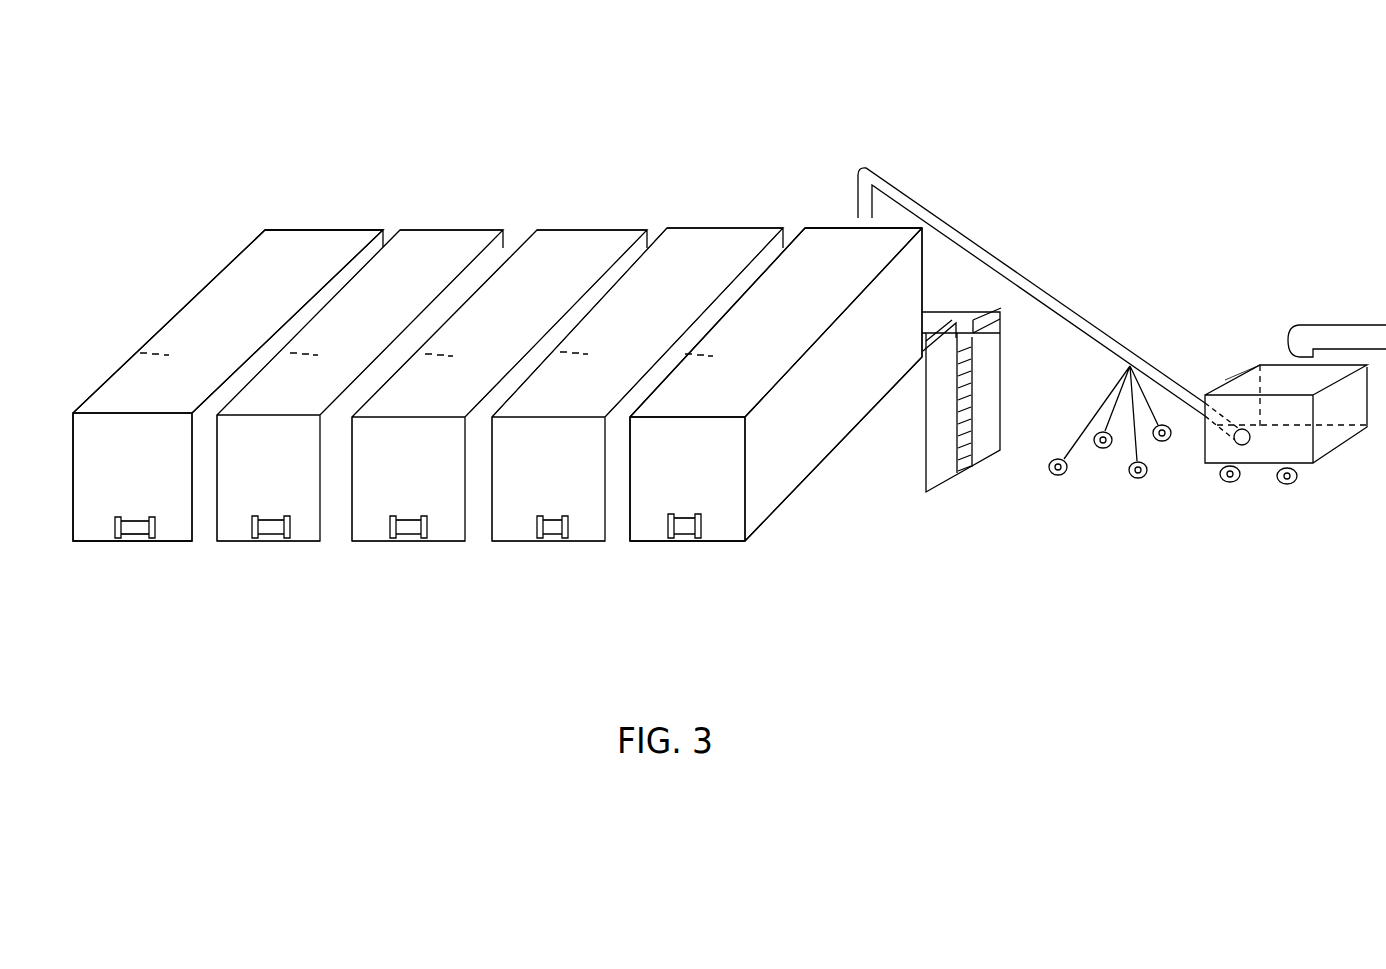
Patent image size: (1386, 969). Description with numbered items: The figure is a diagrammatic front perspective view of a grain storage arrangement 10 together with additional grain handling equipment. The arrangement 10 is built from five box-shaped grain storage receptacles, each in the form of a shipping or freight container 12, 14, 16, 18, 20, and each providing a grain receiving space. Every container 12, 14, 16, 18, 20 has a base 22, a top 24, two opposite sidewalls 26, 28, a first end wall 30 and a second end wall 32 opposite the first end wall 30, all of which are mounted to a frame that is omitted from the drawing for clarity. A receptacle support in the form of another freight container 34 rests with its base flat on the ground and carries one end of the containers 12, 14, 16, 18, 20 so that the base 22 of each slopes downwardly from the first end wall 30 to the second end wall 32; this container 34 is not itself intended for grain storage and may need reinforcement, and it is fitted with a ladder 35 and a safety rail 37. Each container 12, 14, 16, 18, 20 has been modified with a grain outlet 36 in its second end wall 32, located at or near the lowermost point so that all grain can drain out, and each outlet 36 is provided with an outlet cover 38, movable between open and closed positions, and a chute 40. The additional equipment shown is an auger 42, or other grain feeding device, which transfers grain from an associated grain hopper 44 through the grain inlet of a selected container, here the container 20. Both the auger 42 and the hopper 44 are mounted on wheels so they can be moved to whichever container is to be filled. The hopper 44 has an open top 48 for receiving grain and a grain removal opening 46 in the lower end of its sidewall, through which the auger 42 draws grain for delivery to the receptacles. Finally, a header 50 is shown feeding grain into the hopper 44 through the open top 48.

The grain storage arrangement 10 is at (287, 184).
The shipping container 12 is at (73, 540).
The shipping container 14 is at (217, 538).
The shipping container 16 is at (356, 536).
The shipping container 18 is at (508, 536).
The shipping container 20 is at (632, 538).
The base 22 is at (100, 517).
The top 24 is at (318, 250).
The sidewall 26 is at (133, 352).
The sidewall 28 is at (232, 384).
The first end wall 30 is at (282, 246).
The second end wall 32 is at (88, 453).
The freight container 34 is at (910, 478).
The ladder 35 is at (958, 473).
The grain outlet 36 is at (408, 501).
The safety rail 37 is at (1000, 322).
The outlet cover 38 is at (140, 520).
The chute 40 is at (160, 538).
The auger 42 is at (1100, 330).
The grain hopper 44 is at (1325, 445).
The grain removal opening 46 is at (1228, 442).
The open top 48 is at (1254, 372).
The header 50 is at (1325, 327).